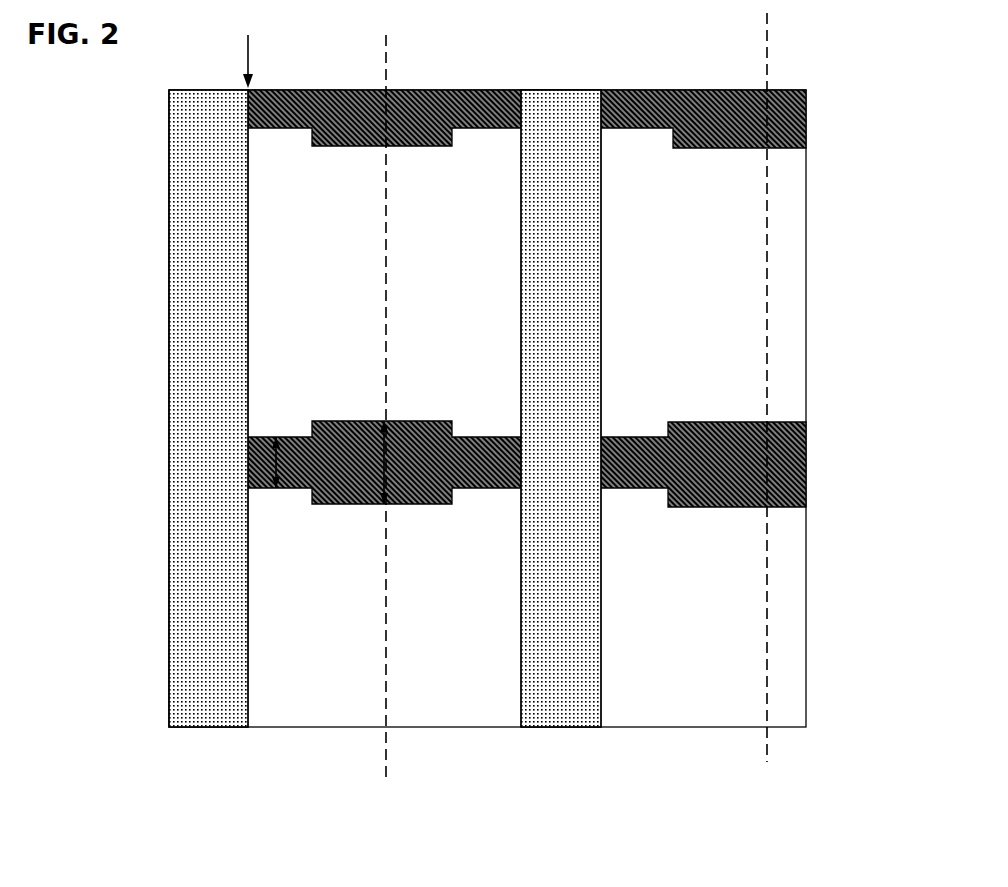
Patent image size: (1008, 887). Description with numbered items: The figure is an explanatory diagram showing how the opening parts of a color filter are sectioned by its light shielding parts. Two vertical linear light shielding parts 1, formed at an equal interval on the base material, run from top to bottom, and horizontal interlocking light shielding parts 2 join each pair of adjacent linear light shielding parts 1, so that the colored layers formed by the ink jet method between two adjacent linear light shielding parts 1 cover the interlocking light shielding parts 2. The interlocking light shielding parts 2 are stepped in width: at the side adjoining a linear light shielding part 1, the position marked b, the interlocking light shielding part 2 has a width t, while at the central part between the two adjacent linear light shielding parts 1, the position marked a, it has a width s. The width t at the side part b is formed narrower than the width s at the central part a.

The linear light shielding part 1 is at (557, 133).
The interlocking light shielding part 2 is at (806, 450).
The central part position a is at (386, 396).
The linear light shielding part side position b is at (248, 49).
The width at side part t is at (273, 460).
The width at central part s is at (340, 470).